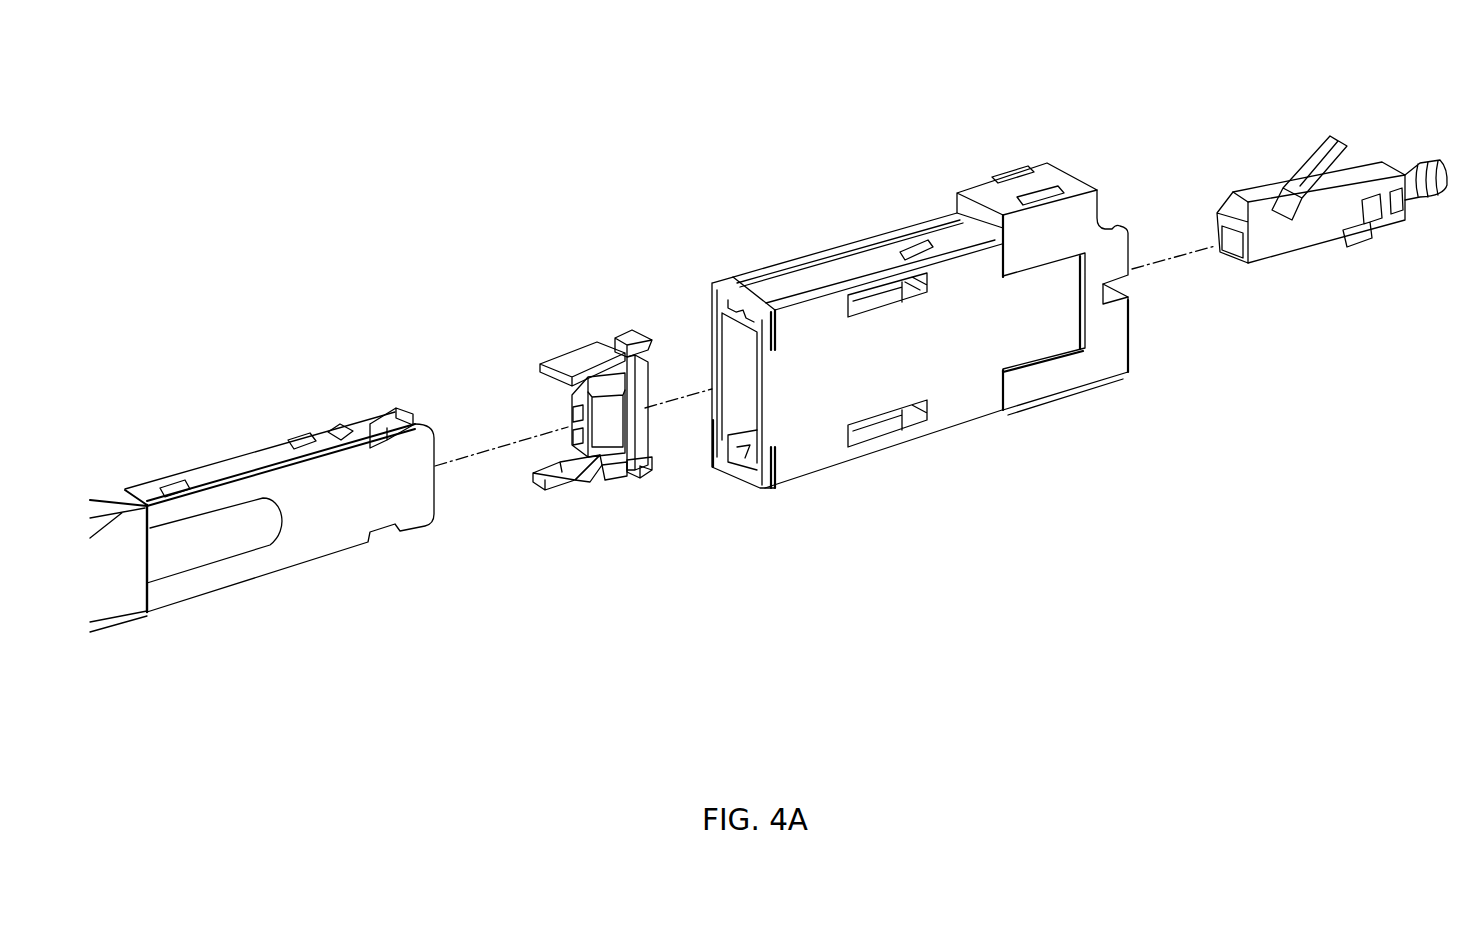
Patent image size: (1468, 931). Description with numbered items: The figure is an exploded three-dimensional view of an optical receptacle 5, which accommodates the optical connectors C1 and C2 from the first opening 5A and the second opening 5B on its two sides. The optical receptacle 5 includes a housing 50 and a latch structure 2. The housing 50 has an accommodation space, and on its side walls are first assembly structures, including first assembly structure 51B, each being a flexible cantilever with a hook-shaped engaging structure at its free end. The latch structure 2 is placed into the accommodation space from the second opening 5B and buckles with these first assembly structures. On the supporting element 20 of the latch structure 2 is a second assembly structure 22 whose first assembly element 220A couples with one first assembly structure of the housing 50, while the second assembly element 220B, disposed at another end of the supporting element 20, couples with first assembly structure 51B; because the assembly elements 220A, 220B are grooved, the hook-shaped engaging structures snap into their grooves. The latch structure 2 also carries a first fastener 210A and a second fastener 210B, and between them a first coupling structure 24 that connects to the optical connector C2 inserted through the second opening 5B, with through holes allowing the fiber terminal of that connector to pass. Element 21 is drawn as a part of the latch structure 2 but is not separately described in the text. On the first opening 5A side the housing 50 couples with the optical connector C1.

The latch structure 2 is at (537, 373).
The supporting element 20 is at (632, 440).
The first elastic arm 21 is at (540, 485).
The second assembly structure 22 is at (620, 490).
The first coupling structure 24 is at (578, 432).
The first fastener 210A is at (593, 482).
The second fastener 210B is at (562, 362).
The first assembly element 220A is at (637, 472).
The second assembly element 220B is at (630, 366).
The optical receptacle 5 is at (735, 122).
The housing 50 is at (866, 275).
The first opening 5A is at (1107, 229).
The second opening 5B is at (727, 323).
The first assembly structure 51B is at (945, 240).
The optical connector C1 is at (1270, 185).
The optical connector C2 is at (340, 434).